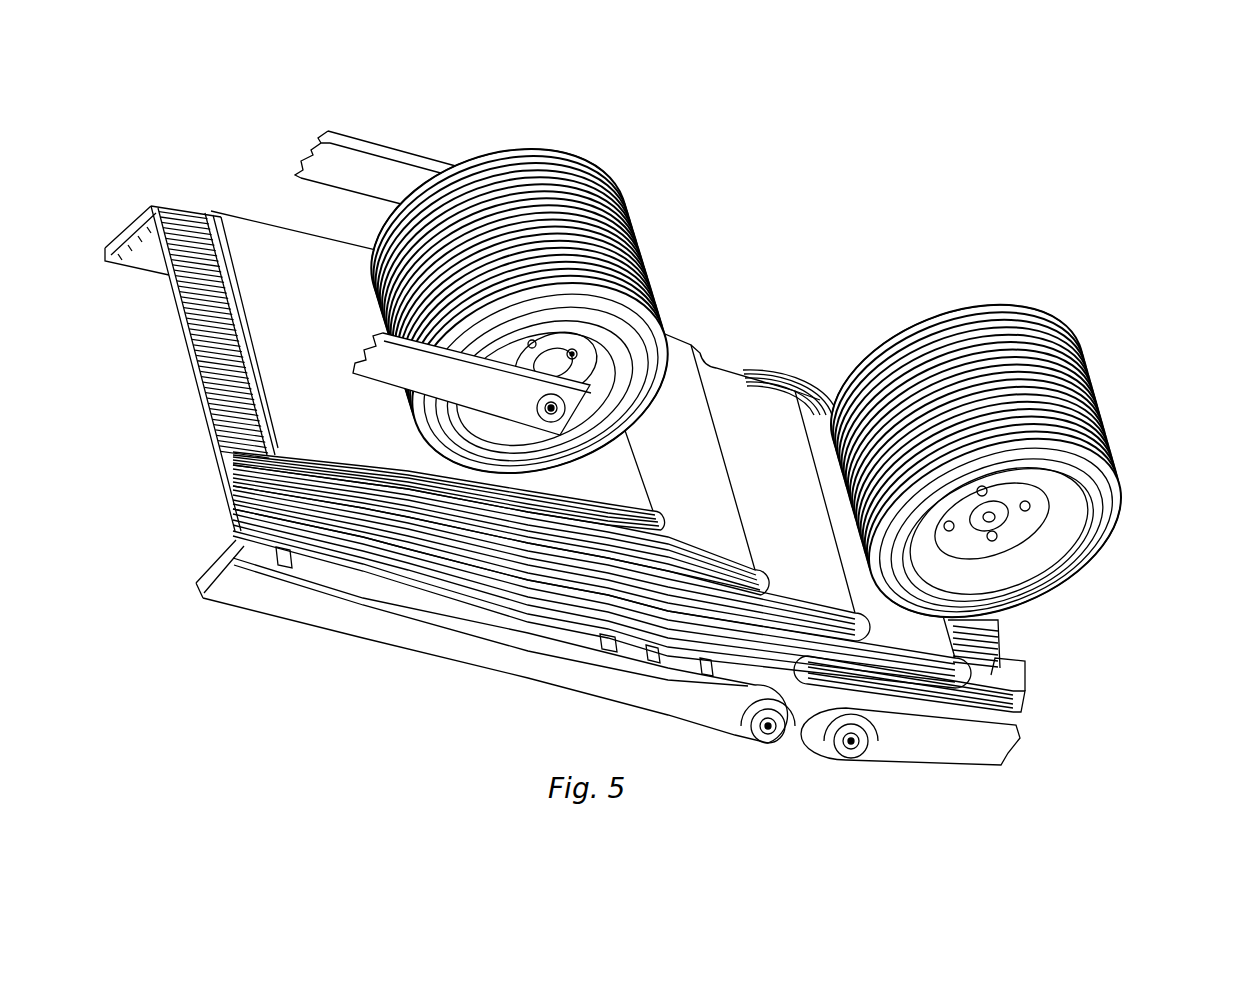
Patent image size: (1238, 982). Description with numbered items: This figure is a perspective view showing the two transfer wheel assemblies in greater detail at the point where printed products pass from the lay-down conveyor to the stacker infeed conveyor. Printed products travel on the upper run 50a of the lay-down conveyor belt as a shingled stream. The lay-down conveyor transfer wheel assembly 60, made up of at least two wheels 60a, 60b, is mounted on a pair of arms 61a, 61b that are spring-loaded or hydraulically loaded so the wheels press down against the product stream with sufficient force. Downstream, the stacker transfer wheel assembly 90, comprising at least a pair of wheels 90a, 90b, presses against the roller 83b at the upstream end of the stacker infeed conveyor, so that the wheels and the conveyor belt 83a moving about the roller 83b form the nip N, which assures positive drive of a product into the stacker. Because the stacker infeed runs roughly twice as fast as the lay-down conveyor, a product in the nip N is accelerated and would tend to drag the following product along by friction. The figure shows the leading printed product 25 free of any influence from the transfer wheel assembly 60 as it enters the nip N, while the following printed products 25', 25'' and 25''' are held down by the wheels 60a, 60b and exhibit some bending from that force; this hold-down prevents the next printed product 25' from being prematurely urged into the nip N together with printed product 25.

The printed product 25 is at (602, 529).
The printed product 25' is at (551, 493).
The printed product 25'' is at (501, 446).
The printed product 25''' is at (437, 370).
The upper run of the lay-down conveyor belt 50a is at (222, 510).
The lay-down conveyor transfer wheel assembly 60 is at (660, 138).
The transfer wheel 60a is at (672, 272).
The transfer wheel 60b is at (575, 125).
The arm 61a is at (363, 362).
The arm 61b is at (358, 158).
The conveyor belt 83a is at (1008, 687).
The roller 83b is at (797, 745).
The stacker transfer wheel assembly 90 is at (898, 290).
The transfer wheel 90a is at (1122, 428).
The transfer wheel 90b is at (1094, 318).
The nip N is at (998, 622).